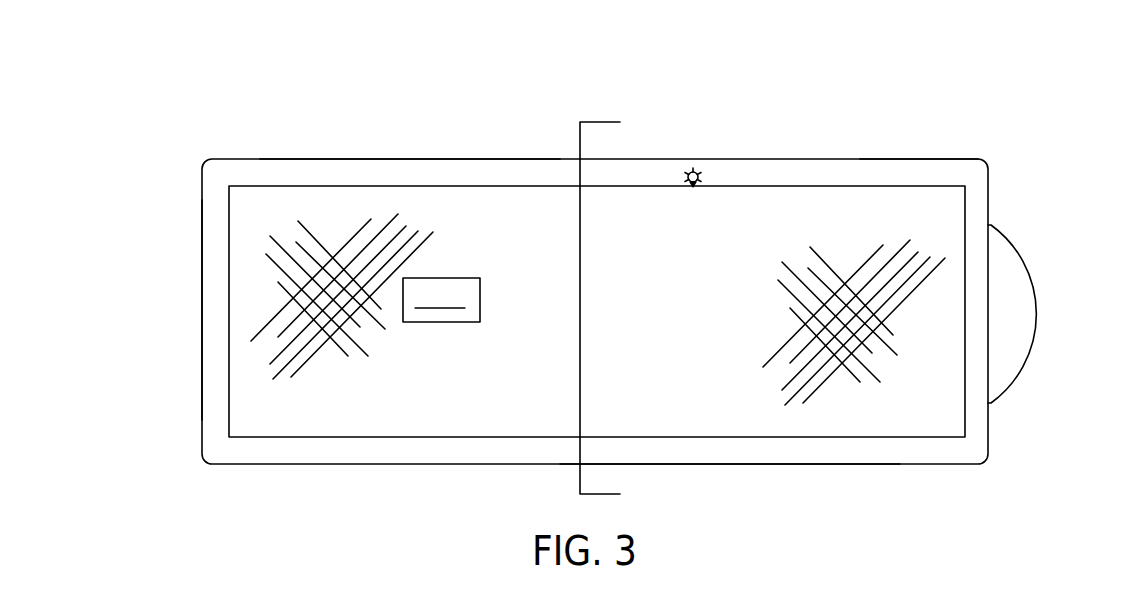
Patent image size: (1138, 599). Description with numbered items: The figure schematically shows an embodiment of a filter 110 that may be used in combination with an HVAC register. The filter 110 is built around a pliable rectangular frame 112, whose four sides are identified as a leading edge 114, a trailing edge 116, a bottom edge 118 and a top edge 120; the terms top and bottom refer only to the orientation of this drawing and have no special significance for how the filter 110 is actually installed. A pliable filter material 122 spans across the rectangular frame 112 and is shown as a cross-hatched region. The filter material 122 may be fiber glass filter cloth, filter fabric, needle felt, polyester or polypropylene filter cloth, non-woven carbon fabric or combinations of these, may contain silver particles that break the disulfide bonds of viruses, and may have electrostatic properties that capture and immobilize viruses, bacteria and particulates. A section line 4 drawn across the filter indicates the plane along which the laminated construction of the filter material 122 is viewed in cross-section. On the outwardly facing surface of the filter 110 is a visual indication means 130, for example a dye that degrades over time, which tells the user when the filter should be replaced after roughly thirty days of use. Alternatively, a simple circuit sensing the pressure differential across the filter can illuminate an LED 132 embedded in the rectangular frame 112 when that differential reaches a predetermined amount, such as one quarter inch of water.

The section line 4 is at (611, 309).
The filter 110 is at (817, 92).
The pliable rectangular frame 112 is at (900, 147).
The leading edge 114 is at (188, 290).
The trailing edge 116 is at (1033, 277).
The bottom edge 118 is at (727, 470).
The top edge 120 is at (395, 153).
The pliable filter material 122 is at (833, 397).
The visual indication means 130 is at (441, 300).
The LED 132 is at (695, 152).